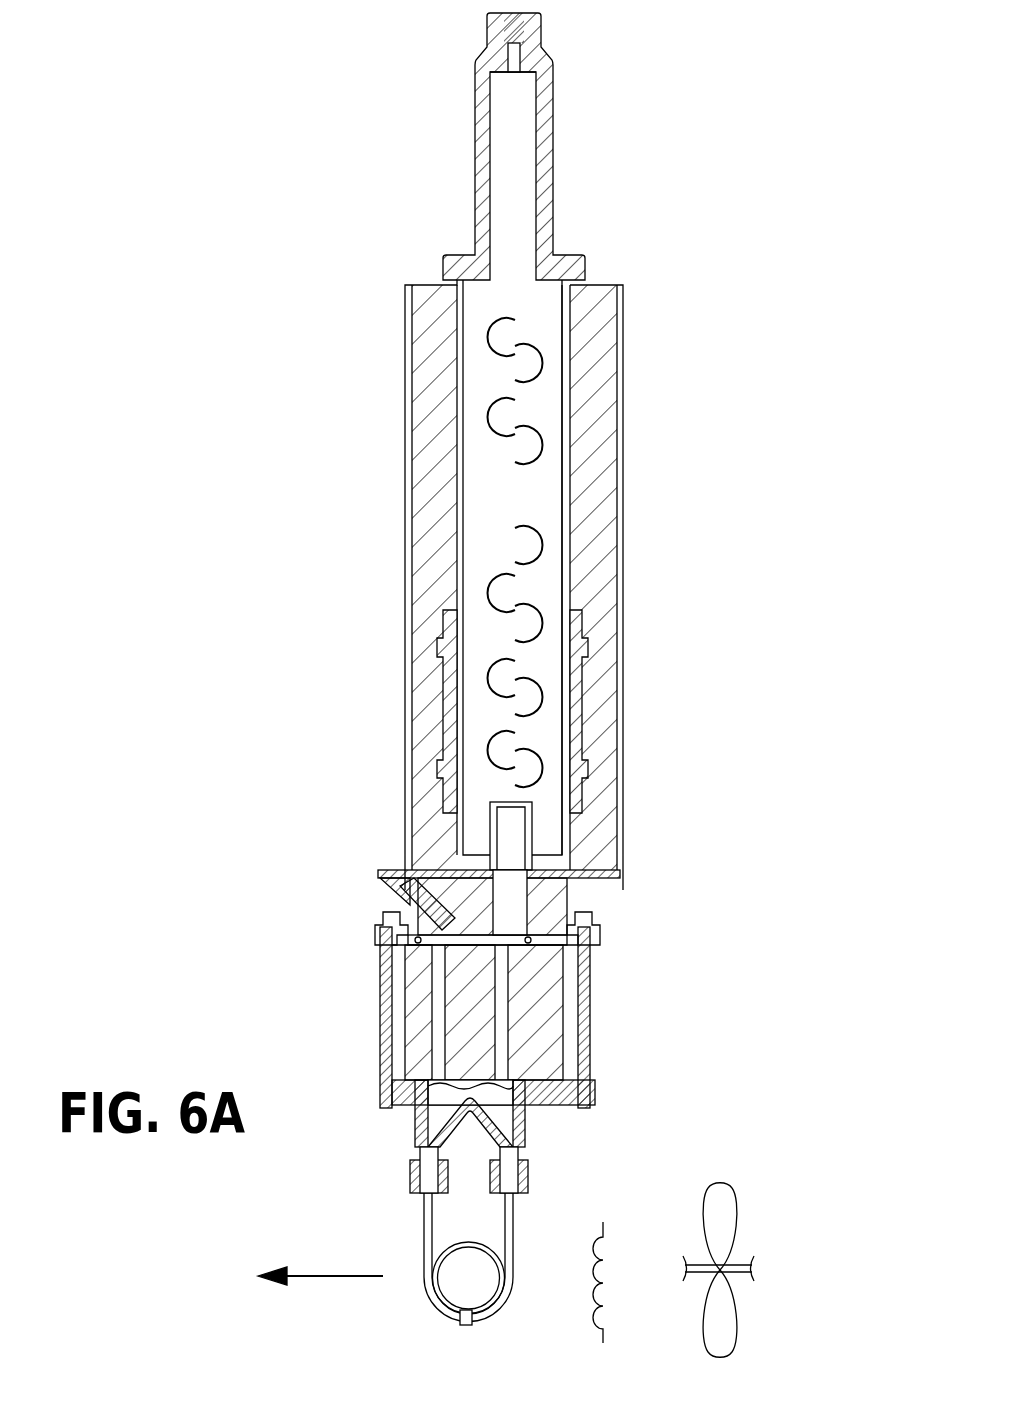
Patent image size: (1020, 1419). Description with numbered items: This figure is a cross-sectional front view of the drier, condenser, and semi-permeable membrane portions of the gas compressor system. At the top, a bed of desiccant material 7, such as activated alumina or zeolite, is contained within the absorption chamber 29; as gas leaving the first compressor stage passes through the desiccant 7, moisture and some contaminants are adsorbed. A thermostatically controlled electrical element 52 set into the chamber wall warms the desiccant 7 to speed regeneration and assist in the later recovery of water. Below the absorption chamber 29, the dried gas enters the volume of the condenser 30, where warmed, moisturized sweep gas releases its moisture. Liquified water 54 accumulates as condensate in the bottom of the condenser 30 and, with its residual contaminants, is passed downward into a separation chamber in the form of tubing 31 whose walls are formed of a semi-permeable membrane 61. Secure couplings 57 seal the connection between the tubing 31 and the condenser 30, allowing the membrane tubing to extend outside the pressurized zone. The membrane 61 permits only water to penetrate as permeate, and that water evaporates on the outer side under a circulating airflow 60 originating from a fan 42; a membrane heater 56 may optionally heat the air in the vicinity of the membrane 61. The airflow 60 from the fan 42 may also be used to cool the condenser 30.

The desiccant bed 7 is at (490, 505).
The absorption chamber 29 is at (455, 572).
The thermostatically controlled electrical element 52 is at (573, 697).
The condenser 30 is at (460, 1000).
The liquified water 54 is at (445, 1098).
The secure couplings 57 is at (527, 1177).
The circulating airflow 60 is at (338, 1275).
The tubing 31 is at (390, 1276).
The semi-permeable membrane 61 is at (428, 1300).
The membrane heater 56 is at (587, 1296).
The fan 42 is at (700, 1308).